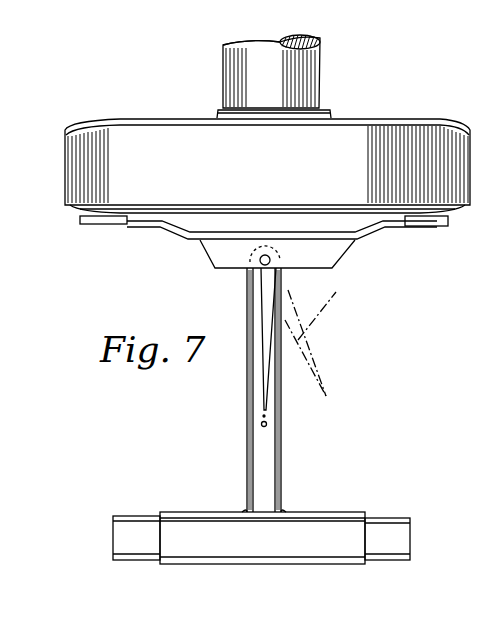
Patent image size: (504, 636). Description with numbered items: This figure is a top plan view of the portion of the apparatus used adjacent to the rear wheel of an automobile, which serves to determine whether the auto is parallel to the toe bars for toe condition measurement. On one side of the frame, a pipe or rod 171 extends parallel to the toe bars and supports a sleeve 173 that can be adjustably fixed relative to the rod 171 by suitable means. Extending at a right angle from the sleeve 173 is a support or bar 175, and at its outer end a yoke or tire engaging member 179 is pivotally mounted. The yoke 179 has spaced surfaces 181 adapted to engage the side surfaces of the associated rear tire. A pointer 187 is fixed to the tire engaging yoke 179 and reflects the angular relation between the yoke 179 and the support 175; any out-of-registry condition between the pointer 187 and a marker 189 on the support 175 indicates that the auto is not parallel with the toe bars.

The pipe or rod 171 is at (397, 532).
The sleeve 173 is at (340, 520).
The support or bar 175 is at (262, 448).
The yoke or tire engaging member 179 is at (185, 237).
The spaced surfaces 181 is at (125, 220).
The pointer 187 is at (275, 288).
The marker 189 is at (260, 424).